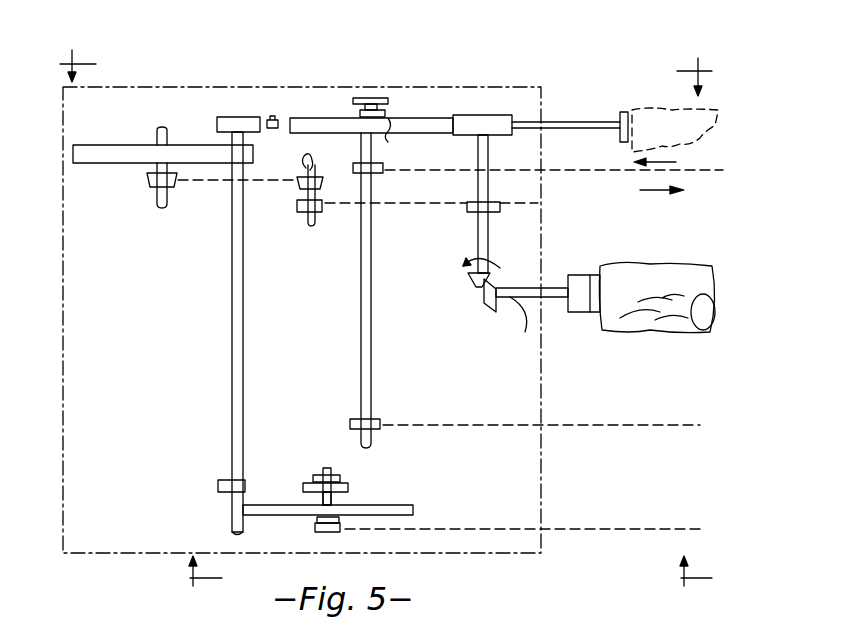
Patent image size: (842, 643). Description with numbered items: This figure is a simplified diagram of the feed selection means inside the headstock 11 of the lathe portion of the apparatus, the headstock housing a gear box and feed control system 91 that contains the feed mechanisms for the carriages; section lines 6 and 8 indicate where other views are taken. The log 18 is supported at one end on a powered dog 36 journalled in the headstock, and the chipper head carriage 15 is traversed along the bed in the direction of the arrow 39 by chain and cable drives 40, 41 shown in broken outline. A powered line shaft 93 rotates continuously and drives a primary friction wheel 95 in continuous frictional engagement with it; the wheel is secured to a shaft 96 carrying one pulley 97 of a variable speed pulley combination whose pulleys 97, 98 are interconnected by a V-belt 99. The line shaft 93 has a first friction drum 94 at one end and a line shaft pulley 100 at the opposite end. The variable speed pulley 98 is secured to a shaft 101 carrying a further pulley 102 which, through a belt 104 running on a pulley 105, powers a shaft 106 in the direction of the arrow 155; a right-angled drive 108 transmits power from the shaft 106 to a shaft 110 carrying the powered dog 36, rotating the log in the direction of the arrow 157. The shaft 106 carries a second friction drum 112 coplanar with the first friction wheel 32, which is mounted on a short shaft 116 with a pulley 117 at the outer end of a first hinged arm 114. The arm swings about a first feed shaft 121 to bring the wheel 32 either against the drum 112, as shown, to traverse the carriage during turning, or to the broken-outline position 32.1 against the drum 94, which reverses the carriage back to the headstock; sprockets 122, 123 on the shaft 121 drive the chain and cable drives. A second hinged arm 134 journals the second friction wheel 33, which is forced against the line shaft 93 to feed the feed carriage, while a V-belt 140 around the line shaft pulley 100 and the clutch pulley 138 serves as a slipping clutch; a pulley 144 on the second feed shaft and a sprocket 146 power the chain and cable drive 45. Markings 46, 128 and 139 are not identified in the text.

The section line 6- 6 is at (386, 65).
The section line 8- 8 is at (449, 583).
The headstock 11 is at (505, 86).
The chipper head carriage 15 is at (668, 96).
The log 18 is at (692, 254).
The first friction wheel 32 is at (326, 105).
The first position of the wheel 32.1 is at (270, 116).
The second friction wheel 33 is at (413, 510).
The powered dog 36 is at (580, 278).
The arrow 39 is at (644, 192).
The chain and cable drive 40 is at (572, 176).
The chain and cable drive 41 is at (590, 412).
The chain and cable drive 45 is at (506, 516).
The direction arrow 46 is at (672, 160).
The gear box and feed control system 91 is at (420, 82).
The line shaft 93 is at (232, 372).
The first friction drum 94 is at (240, 103).
The primary friction wheel 95 is at (118, 135).
The shaft 96 is at (152, 176).
The pulley 97 is at (172, 183).
The variable speed pulley 98 is at (304, 190).
The V-belt 99 is at (286, 166).
The line shaft pulley 100 is at (238, 482).
The shaft 101 is at (312, 146).
The further pulley 102 is at (300, 208).
The belt 104 is at (406, 212).
The pulley 105 is at (526, 198).
The shaft 106 is at (486, 240).
The right-angled drive 108 is at (468, 280).
The shaft 110 is at (556, 300).
The second friction drum 112 is at (475, 124).
The first hinged arm 114 is at (388, 136).
The short shaft 116 is at (388, 112).
The pulley 117 is at (384, 98).
The first feed shaft 121 is at (360, 287).
The sprocket 122 is at (383, 170).
The sprocket 123 is at (380, 422).
The push rod 128 is at (595, 98).
The second hinged arm 134 is at (316, 521).
The clutch pulley 138 is at (340, 480).
The stem 139 is at (334, 498).
The V-belt 140 is at (298, 470).
The pulley 144 is at (304, 490).
The sprocket 146 is at (330, 532).
The arrow 155 is at (498, 262).
The arrow 157 is at (510, 300).